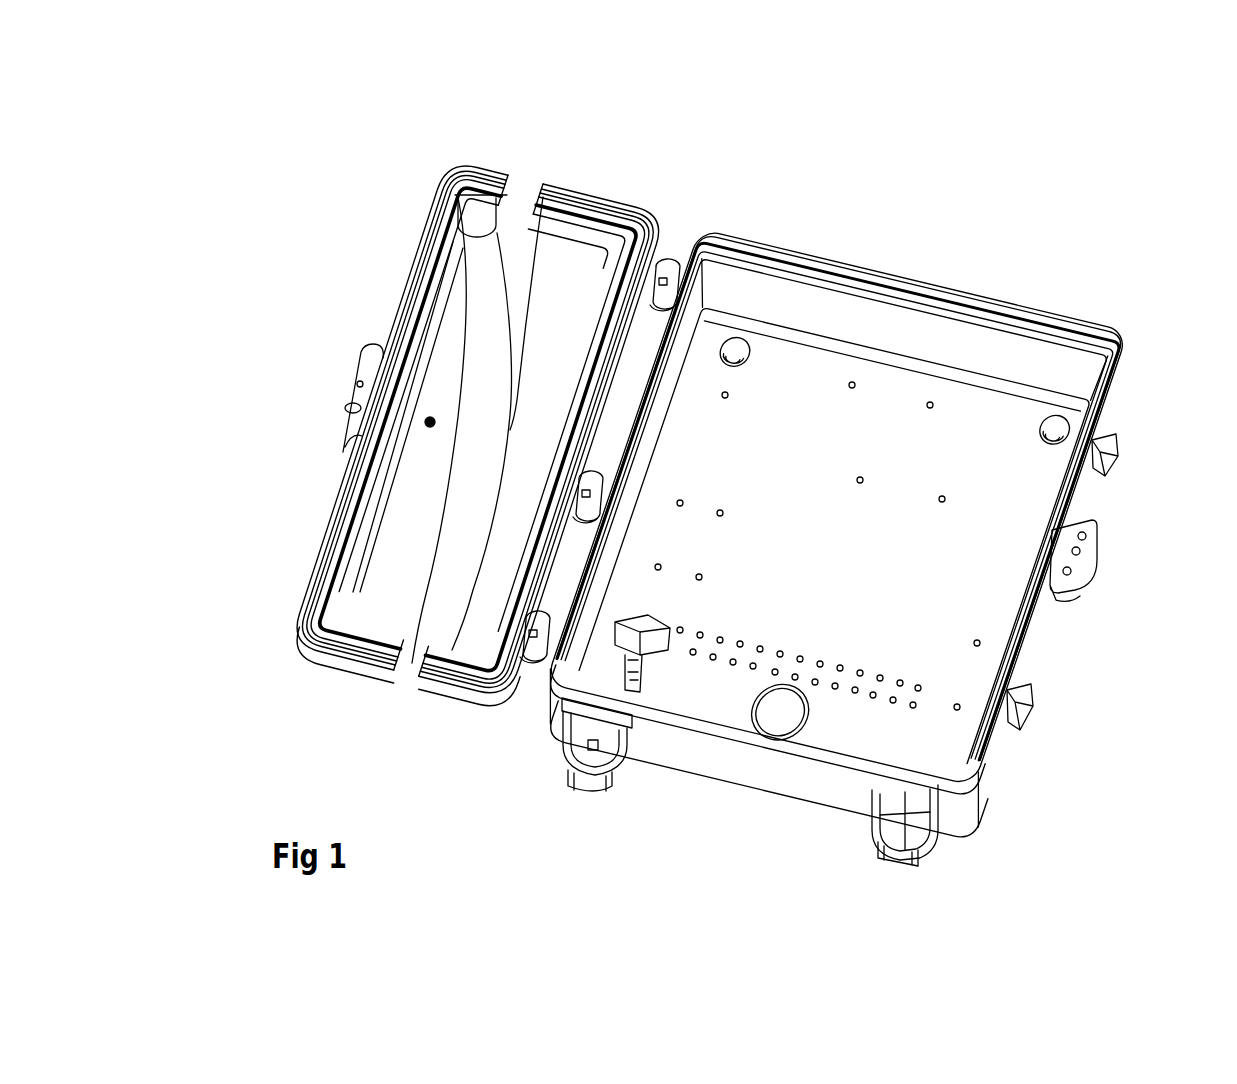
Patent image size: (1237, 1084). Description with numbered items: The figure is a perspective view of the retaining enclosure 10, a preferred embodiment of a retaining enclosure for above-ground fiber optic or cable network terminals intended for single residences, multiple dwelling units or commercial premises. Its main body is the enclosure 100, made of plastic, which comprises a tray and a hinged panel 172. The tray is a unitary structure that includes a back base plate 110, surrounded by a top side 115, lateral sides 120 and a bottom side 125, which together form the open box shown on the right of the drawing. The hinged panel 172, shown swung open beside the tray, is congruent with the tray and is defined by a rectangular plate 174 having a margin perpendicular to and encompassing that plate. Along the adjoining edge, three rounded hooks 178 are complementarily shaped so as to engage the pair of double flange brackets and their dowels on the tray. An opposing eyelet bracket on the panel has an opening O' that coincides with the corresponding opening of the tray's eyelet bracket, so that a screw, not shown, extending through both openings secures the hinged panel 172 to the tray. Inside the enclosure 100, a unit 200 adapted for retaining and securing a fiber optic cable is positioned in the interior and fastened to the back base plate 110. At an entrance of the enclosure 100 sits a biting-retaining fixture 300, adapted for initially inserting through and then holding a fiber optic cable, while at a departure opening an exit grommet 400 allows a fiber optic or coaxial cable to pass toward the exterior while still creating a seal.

The retaining enclosure 10 is at (942, 215).
The enclosure 100 is at (696, 502).
The back base plate 110 is at (700, 535).
The top side 115 is at (840, 510).
The lateral sides 120 is at (700, 496).
The bottom side 125 is at (767, 751).
The hinged panel 172 is at (457, 436).
The rectangular plate 174 is at (399, 429).
The rounded hooks 178 is at (600, 396).
The opening O' is at (315, 392).
The unit 200 is at (489, 680).
The biting-retaining fixture 300 is at (508, 745).
The exit grommet 400 is at (978, 830).